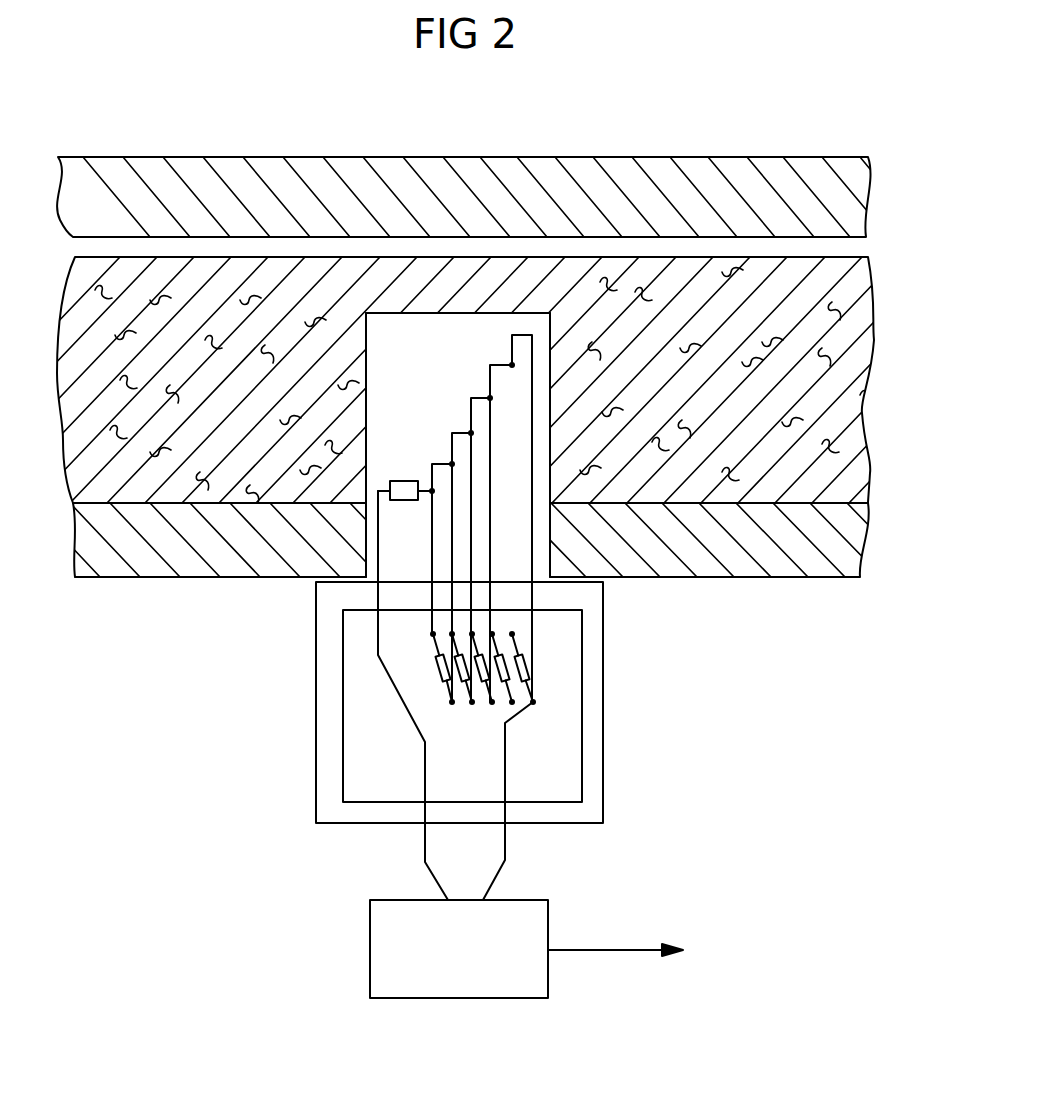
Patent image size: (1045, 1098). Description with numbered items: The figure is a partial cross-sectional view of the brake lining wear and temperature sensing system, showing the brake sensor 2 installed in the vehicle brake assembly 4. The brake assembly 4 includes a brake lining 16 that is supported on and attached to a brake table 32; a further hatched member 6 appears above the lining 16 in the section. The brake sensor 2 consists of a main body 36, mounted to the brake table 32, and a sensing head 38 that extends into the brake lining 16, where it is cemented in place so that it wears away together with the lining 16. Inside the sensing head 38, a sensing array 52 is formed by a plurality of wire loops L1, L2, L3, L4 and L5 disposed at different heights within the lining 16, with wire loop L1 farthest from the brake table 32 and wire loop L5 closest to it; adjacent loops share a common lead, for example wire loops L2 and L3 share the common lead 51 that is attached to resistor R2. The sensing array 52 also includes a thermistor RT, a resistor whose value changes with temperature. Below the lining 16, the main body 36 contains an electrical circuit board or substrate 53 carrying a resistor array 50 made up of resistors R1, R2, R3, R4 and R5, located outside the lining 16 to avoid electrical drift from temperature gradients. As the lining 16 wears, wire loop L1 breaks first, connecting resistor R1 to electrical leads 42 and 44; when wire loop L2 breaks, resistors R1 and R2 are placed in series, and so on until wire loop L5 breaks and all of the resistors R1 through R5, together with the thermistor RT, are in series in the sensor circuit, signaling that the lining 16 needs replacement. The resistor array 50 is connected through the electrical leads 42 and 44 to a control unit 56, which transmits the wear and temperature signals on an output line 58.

The brake sensor 2 is at (446, 609).
The vehicle brake assembly 4 is at (522, 331).
The brake rotor 6 is at (735, 178).
The brake lining 16 is at (840, 362).
The brake table 32 is at (737, 563).
The main body 36 is at (502, 702).
The sensing head 38 is at (402, 328).
The electrical lead 42 is at (423, 862).
The electrical lead 44 is at (507, 860).
The resistor array 50 is at (525, 715).
The common lead 51 is at (452, 510).
The sensing array 52 is at (381, 510).
The electrical circuit board or substrate 53 is at (510, 706).
The control unit 56 is at (548, 982).
The output line 58 is at (640, 950).
The wire loop L1 is at (507, 352).
The wire loop L2 is at (488, 387).
The wire loop L3 is at (470, 415).
The wire loop L4 is at (452, 443).
The wire loop L5 is at (432, 470).
The resistor R1 is at (523, 668).
The resistor R2 is at (503, 703).
The resistor R3 is at (480, 685).
The resistor R4 is at (467, 683).
The resistor R5 is at (438, 670).
The thermistor RT is at (403, 497).